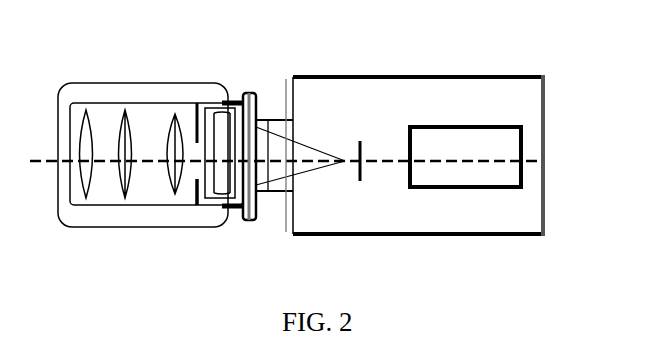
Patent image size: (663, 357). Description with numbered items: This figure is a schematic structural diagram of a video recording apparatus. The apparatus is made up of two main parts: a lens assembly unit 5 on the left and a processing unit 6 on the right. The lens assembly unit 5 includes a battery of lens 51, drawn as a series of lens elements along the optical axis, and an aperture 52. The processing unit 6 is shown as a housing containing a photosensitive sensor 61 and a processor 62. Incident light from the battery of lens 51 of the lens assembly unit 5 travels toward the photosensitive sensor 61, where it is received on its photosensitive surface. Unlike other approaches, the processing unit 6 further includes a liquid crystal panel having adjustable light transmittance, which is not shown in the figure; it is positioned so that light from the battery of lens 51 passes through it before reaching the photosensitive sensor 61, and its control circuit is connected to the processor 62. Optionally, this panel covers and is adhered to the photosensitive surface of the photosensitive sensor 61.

The lens assembly unit 5 is at (214, 78).
The battery of lens 51 is at (143, 107).
The aperture 52 is at (197, 197).
The processing unit 6 is at (553, 143).
The photosensitive sensor 61 is at (360, 140).
The processor 62 is at (460, 124).